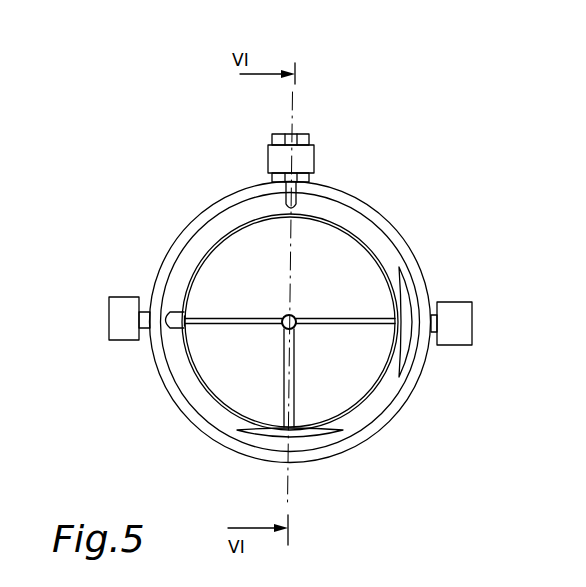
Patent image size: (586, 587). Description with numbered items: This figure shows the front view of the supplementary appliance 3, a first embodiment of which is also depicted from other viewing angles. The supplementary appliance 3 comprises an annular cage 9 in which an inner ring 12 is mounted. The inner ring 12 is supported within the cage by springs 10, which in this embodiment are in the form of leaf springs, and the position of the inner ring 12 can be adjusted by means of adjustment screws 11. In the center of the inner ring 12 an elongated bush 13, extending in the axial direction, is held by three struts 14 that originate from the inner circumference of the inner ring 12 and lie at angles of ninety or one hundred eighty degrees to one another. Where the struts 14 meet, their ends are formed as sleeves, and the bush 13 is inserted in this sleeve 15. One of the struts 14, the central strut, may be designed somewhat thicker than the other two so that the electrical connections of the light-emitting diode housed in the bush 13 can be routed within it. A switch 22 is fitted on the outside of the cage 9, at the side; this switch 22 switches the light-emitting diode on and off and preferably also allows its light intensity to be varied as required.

The supplementary appliance 3 is at (208, 153).
The annular cage 9 is at (198, 222).
The springs 10 is at (403, 345).
The adjustment screws 11 is at (292, 158).
The inner ring 12 is at (338, 227).
The bush 13 is at (194, 387).
The struts 14 is at (330, 320).
The sleeve 15 is at (283, 326).
The switch 22 is at (455, 323).